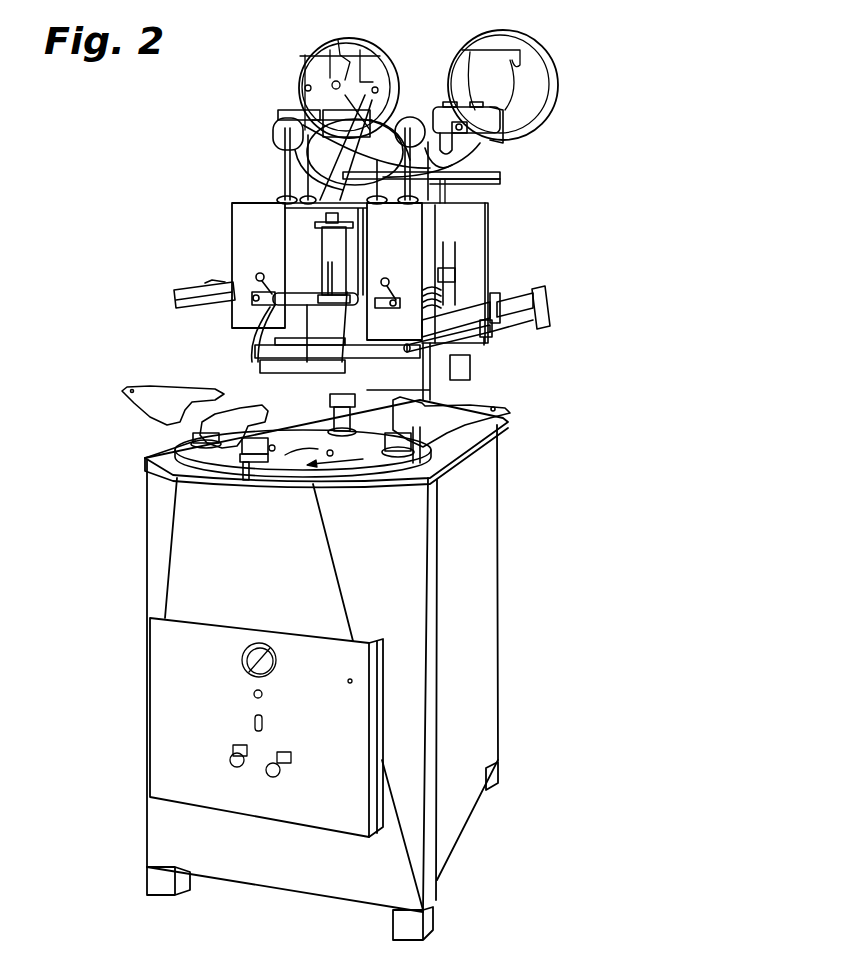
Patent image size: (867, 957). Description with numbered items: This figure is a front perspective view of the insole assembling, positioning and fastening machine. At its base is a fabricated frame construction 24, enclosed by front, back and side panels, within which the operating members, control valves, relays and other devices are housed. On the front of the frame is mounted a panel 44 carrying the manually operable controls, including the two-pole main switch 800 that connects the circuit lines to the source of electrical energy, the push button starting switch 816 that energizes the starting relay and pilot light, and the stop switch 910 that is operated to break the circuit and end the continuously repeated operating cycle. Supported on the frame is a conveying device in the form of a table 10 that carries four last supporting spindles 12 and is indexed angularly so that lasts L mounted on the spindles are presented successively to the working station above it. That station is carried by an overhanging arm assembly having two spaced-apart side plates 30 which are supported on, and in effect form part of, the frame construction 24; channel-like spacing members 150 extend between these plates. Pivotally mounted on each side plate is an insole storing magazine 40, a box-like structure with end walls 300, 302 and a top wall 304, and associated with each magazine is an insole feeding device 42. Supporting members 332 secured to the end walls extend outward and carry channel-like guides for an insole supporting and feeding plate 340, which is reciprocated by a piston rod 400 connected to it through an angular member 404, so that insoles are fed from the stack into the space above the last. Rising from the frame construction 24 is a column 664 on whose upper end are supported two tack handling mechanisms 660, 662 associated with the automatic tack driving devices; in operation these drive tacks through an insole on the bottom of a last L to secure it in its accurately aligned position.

The table 10 is at (150, 466).
The last supporting spindle 12 is at (330, 402).
The last L is at (150, 386).
The fabricated frame construction 24 is at (258, 584).
The side plate 30 is at (283, 275).
The insole storing magazine 40 is at (233, 219).
The insole feeding device 42 is at (207, 287).
The panel 44 is at (197, 675).
The channel-like spacing member 150 is at (285, 368).
The end wall 300 is at (488, 230).
The end wall 302 is at (278, 236).
The top wall 304 is at (248, 202).
The supporting member 332 is at (175, 302).
The insole supporting and feeding plate 340 is at (548, 287).
The piston rod 400 is at (518, 326).
The angular member 404 is at (550, 313).
The tack handling mechanism 660 is at (392, 64).
The tack handling mechanism 662 is at (546, 52).
The column 664 is at (443, 187).
The two-pole main switch 800 is at (252, 722).
The push button starting switch 816 is at (230, 758).
The stop switch 910 is at (283, 767).